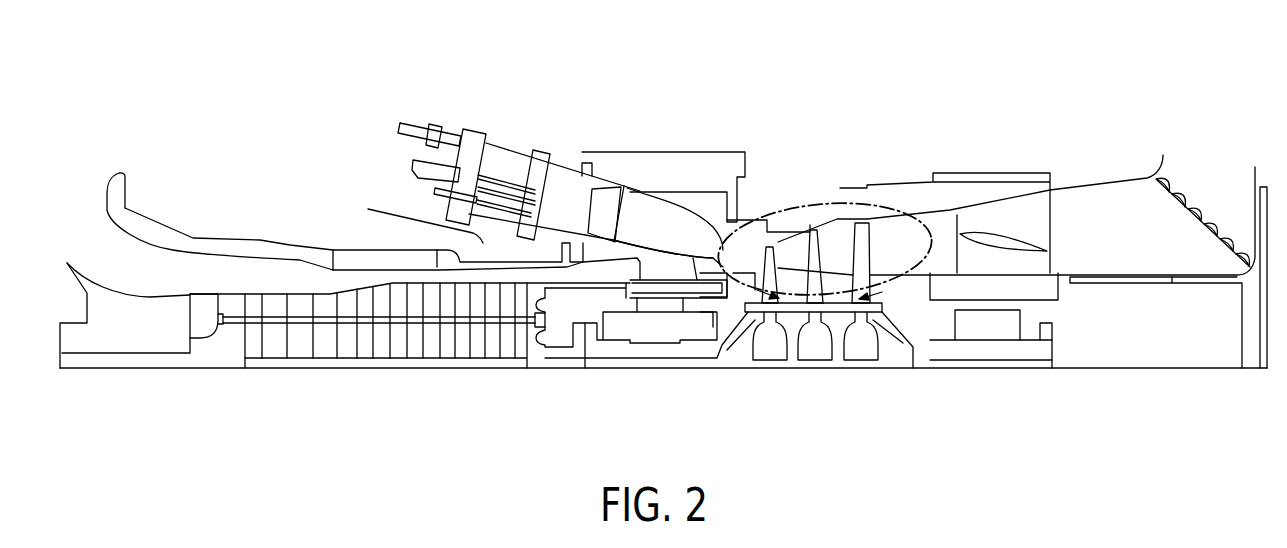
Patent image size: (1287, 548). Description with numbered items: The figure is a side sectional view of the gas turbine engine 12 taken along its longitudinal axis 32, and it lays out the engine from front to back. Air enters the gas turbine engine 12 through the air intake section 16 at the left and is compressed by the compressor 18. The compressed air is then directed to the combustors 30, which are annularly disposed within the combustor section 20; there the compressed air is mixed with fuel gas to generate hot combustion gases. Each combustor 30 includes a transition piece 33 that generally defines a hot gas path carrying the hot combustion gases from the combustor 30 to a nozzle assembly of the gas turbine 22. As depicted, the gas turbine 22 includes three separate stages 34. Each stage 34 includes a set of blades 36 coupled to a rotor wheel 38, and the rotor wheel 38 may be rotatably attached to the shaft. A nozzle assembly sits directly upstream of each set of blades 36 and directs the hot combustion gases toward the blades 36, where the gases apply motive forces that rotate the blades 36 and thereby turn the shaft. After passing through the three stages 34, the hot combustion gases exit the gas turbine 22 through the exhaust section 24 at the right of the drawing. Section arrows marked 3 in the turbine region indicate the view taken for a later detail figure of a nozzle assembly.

The fan section 12 is at (575, 393).
The inlet 16 is at (122, 270).
The fan case 18 is at (285, 218).
The gas turbine engine 20 is at (633, 58).
The combustor section 22 is at (847, 140).
The turbine section 24 is at (850, 140).
The fuel injector 30 is at (394, 151).
The exhaust frame 32 is at (1122, 372).
The combustor liner 33 is at (693, 258).
The turbine stage 34 is at (748, 403).
The combustion zone 36 is at (815, 243).
The turbine blade 38 is at (861, 378).
The section view FIG. 3 is at (819, 306).